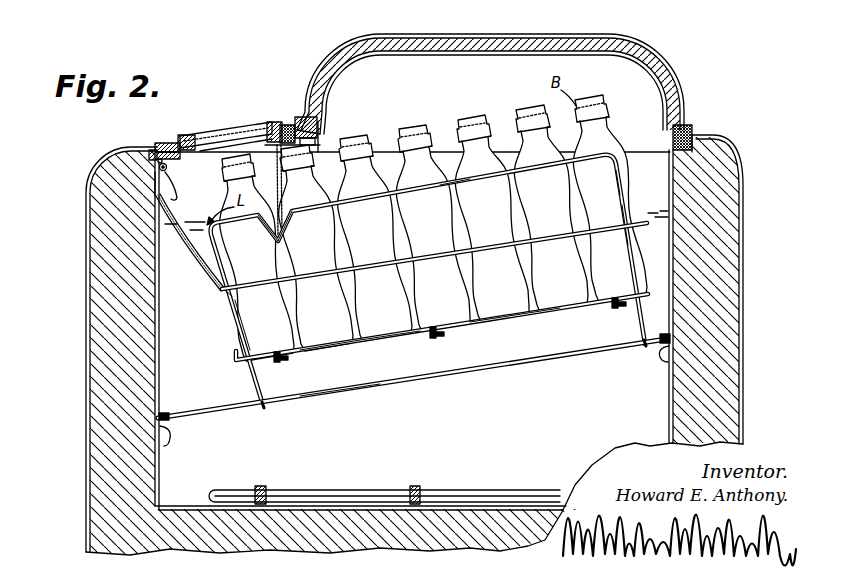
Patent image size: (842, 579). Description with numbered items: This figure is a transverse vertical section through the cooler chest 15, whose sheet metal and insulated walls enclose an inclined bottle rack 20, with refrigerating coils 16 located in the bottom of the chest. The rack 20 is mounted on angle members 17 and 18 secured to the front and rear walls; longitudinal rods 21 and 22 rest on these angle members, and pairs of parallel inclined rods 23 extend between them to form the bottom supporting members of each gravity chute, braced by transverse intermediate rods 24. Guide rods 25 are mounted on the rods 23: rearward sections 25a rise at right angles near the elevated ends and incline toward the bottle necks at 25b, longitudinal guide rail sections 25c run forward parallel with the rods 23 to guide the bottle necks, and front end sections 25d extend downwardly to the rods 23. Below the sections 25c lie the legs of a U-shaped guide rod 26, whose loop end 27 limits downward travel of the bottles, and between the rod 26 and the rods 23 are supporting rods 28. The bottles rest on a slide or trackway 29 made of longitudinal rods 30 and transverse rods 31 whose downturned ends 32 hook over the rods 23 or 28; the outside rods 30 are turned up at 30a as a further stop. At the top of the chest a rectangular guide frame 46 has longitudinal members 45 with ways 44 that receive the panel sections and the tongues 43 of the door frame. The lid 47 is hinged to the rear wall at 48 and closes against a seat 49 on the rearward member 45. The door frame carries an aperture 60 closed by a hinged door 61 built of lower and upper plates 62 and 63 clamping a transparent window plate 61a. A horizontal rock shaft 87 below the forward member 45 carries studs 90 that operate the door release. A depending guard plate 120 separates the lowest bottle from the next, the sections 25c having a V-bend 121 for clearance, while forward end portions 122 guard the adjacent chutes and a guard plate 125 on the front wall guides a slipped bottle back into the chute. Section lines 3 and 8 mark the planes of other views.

The cooler chest 15 is at (733, 144).
The refrigerating coils 16 is at (316, 497).
The angle member 17 is at (165, 438).
The angle member 18 is at (664, 350).
The inclined bottle rack 20 is at (381, 390).
The longitudinal rod 21 is at (172, 423).
The longitudinal rod 22 is at (666, 337).
The inclined rods 23 is at (436, 374).
The transverse intermediate rods 24 is at (263, 409).
The guide rods 25 is at (617, 150).
The rearward sections 25a is at (636, 245).
The inclined portion 25b is at (619, 188).
The longitudinal guide rail sections 25c is at (453, 192).
The front end sections 25d is at (256, 318).
The U-shaped guide rod 26 is at (500, 246).
The loop end 27 is at (229, 293).
The supporting rods 28 is at (380, 343).
The slide or trackway 29 is at (498, 308).
The longitudinal rods 30 is at (337, 340).
The upturned end 30a is at (233, 358).
The transverse rods 31 is at (277, 362).
The downturned ends 32 is at (282, 368).
The tongues 43 is at (163, 138).
The longitudinal ways 44 is at (157, 142).
The longitudinal members 45 is at (121, 149).
The rectangular guide frame 46 is at (165, 142).
The lid 47 is at (548, 35).
The hinge 48 is at (689, 126).
The seat 49 is at (320, 115).
The aperture 60 is at (170, 163).
The hinged door 61 is at (193, 134).
The transparent window plate 61a is at (209, 131).
The lower plate 62 is at (168, 169).
The upper plate 63 is at (285, 123).
The horizontal rock shaft 87 is at (180, 199).
The studs 90 is at (157, 160).
The guard plate 120 is at (282, 190).
The V-bend 121 is at (287, 228).
The forward end portions 122 is at (228, 218).
The guard plate 125 is at (210, 285).
The section line 3 is at (230, 116).
The section line 8 is at (716, 0).